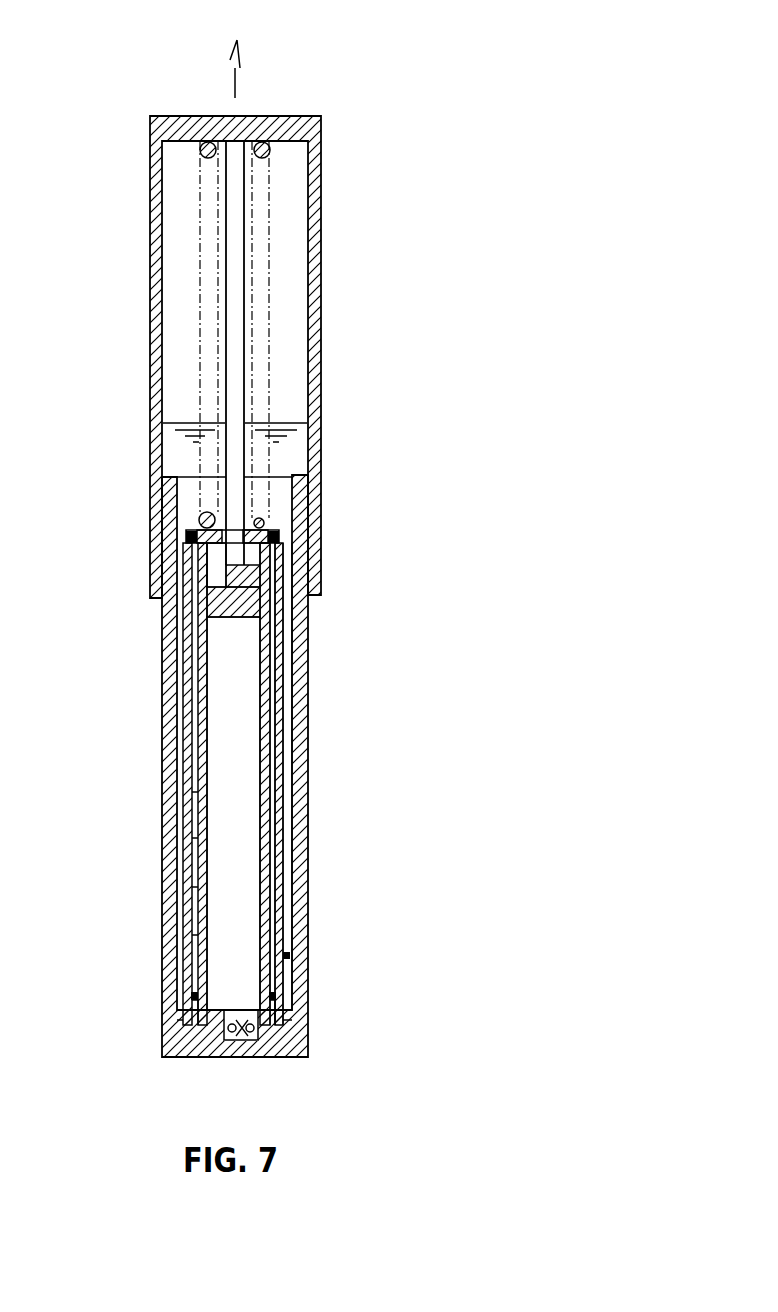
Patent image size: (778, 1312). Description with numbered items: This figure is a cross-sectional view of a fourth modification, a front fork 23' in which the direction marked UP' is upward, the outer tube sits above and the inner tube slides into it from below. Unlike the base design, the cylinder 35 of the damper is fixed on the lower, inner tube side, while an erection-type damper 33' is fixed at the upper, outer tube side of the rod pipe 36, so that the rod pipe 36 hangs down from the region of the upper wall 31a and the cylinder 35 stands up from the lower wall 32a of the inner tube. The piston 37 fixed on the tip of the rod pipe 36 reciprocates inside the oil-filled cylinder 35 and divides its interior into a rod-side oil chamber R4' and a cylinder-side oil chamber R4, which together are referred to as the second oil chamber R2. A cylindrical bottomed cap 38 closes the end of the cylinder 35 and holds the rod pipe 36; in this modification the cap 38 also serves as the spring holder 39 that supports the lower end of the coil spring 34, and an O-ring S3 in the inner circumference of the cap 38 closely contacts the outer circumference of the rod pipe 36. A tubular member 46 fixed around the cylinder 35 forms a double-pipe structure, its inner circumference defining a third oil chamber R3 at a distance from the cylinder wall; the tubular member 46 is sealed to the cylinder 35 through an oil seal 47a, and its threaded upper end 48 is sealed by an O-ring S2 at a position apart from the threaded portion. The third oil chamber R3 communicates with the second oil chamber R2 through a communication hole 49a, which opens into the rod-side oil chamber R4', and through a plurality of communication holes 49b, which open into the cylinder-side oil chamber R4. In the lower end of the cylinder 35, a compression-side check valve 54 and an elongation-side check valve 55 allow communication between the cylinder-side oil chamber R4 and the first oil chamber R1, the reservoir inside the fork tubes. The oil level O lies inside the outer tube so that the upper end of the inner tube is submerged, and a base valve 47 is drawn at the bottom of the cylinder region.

The upward direction UP' is at (239, 56).
The front fork 23' is at (256, 591).
The upper wall 31a is at (288, 116).
The lower wall 32a is at (292, 1050).
The erection-type damper 33' is at (274, 784).
The coil spring 34 is at (262, 158).
The cylinder 35 is at (270, 633).
The rod pipe 36 is at (232, 276).
The piston 37 is at (212, 597).
The cap 38 is at (338, 503).
The spring holder 39 is at (262, 520).
The tubular member 46 is at (284, 800).
The base valve 47 is at (277, 996).
The oil seal 47a is at (190, 998).
The upper end of the tubular member 48 is at (280, 538).
The communication hole 49a is at (256, 566).
The communication holes 49b is at (200, 838).
The compression-side check valve 54 is at (241, 1042).
The elongation-side check valve 55 is at (247, 1042).
The oil level O is at (290, 413).
The first oil chamber R1 is at (289, 956).
The second oil chamber R2 is at (247, 710).
The third oil chamber R3 is at (273, 752).
The cylinder-side oil chamber R4 is at (308, 813).
The rod-side oil chamber R4' is at (337, 572).
The O-ring S2 is at (192, 538).
The O-ring S3 is at (200, 528).